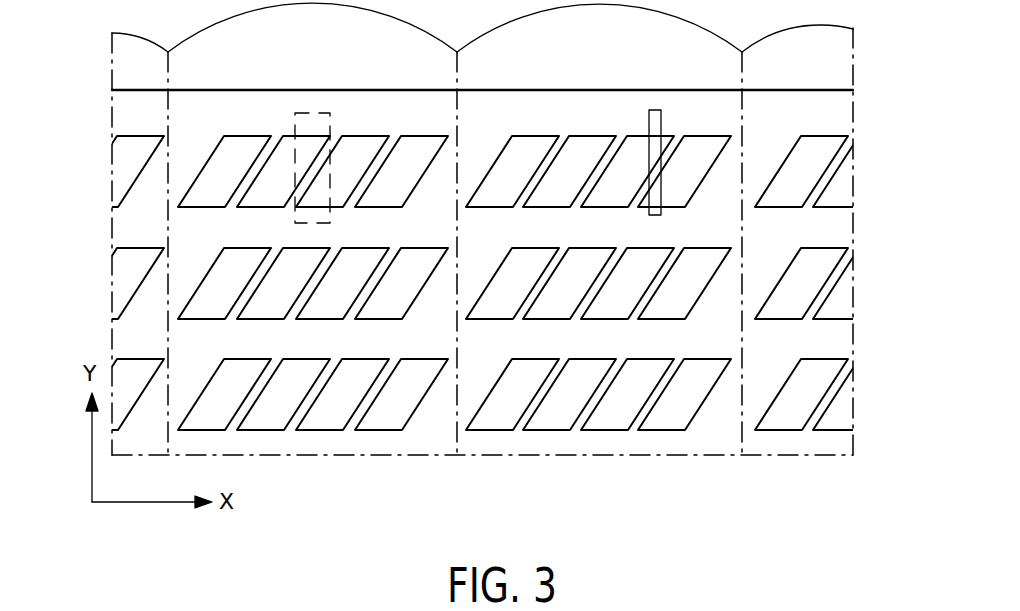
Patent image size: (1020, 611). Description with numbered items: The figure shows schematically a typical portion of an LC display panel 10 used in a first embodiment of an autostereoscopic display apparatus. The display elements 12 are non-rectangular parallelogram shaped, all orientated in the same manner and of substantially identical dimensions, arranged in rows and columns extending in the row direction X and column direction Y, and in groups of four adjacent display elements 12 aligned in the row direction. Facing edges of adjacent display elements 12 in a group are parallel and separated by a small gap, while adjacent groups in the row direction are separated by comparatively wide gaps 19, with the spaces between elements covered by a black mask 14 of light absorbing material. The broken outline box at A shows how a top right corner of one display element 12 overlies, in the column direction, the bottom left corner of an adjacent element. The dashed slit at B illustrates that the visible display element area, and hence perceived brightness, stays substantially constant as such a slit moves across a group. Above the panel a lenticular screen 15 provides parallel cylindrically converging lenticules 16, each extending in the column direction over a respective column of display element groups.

The LC display panel 10 is at (708, 471).
The display elements 12 is at (602, 423).
The black mask 14 is at (833, 335).
The lenticular screen 15 is at (840, 65).
The lenticules 16 is at (495, 38).
The gaps 19 is at (190, 148).
The box in broken outline A is at (330, 122).
The slit in dashed outline B is at (661, 120).